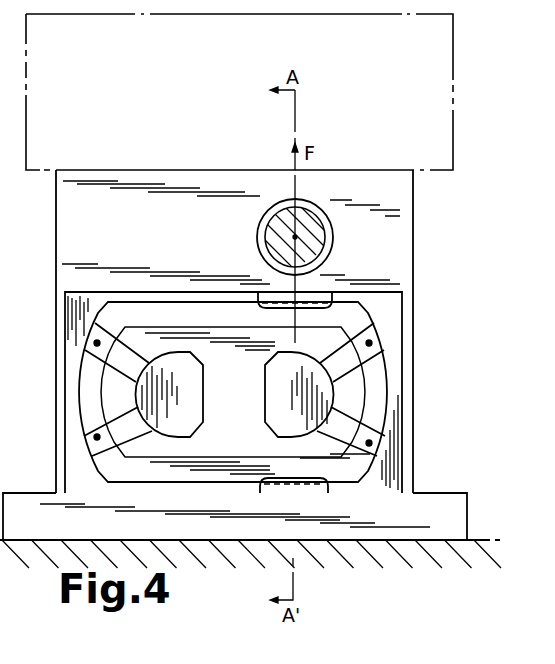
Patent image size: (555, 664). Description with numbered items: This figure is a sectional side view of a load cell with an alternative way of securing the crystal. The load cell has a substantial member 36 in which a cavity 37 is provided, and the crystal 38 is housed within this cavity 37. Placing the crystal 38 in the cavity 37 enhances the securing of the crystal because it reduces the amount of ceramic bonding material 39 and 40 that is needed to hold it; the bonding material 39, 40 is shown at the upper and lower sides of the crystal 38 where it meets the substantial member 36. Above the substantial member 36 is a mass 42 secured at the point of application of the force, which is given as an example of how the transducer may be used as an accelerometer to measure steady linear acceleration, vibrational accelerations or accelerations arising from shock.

The mass 42 is at (455, 117).
The substantial member 36 is at (413, 229).
The cavity 37 is at (392, 311).
The crystal 38 is at (388, 375).
The ceramic bonding material 39 is at (262, 308).
The ceramic bonding material 40 is at (262, 478).